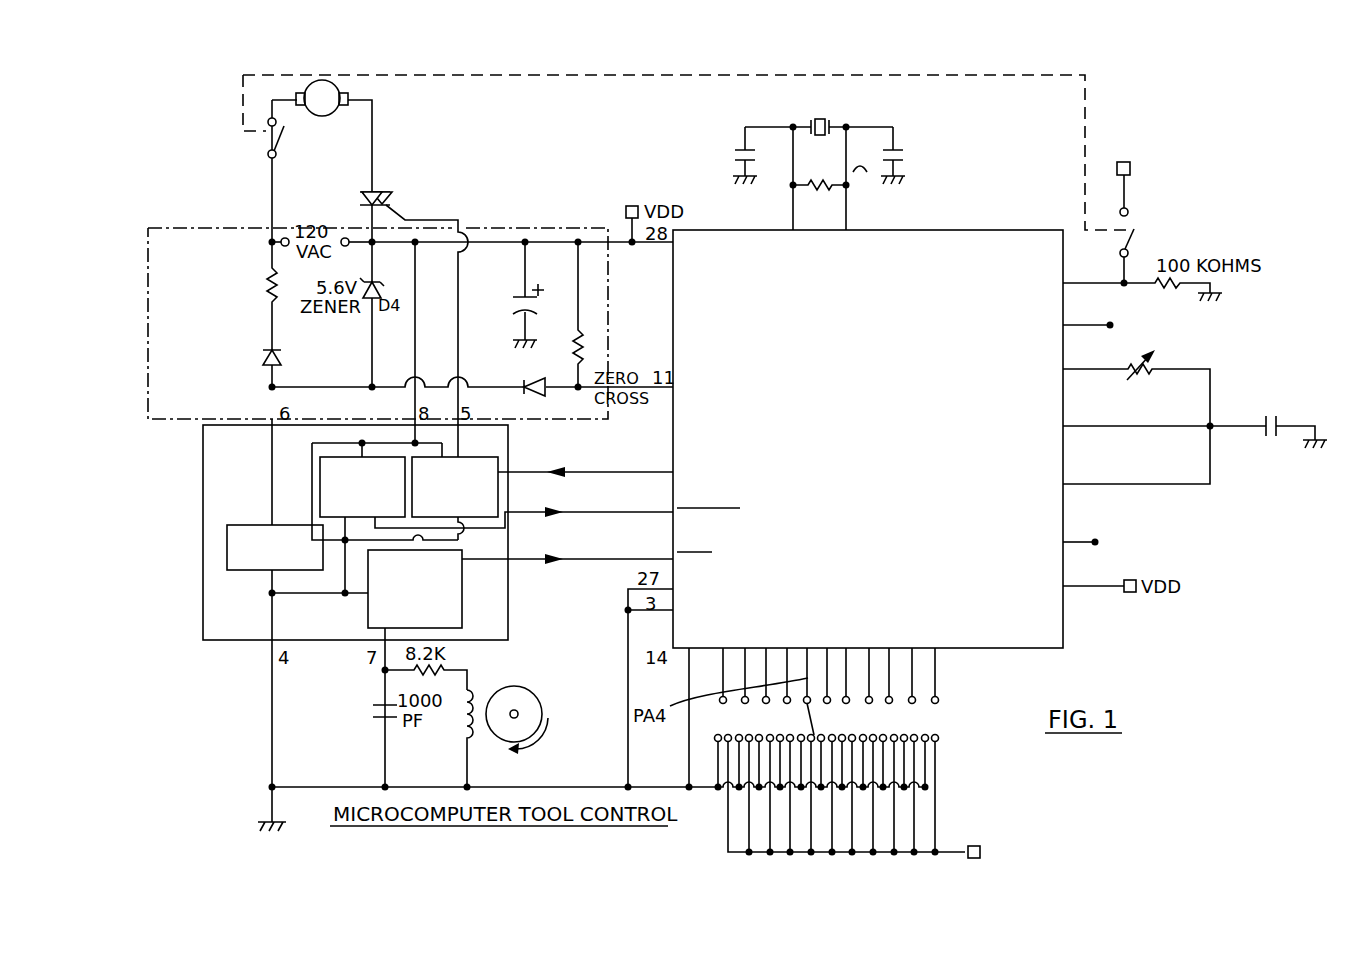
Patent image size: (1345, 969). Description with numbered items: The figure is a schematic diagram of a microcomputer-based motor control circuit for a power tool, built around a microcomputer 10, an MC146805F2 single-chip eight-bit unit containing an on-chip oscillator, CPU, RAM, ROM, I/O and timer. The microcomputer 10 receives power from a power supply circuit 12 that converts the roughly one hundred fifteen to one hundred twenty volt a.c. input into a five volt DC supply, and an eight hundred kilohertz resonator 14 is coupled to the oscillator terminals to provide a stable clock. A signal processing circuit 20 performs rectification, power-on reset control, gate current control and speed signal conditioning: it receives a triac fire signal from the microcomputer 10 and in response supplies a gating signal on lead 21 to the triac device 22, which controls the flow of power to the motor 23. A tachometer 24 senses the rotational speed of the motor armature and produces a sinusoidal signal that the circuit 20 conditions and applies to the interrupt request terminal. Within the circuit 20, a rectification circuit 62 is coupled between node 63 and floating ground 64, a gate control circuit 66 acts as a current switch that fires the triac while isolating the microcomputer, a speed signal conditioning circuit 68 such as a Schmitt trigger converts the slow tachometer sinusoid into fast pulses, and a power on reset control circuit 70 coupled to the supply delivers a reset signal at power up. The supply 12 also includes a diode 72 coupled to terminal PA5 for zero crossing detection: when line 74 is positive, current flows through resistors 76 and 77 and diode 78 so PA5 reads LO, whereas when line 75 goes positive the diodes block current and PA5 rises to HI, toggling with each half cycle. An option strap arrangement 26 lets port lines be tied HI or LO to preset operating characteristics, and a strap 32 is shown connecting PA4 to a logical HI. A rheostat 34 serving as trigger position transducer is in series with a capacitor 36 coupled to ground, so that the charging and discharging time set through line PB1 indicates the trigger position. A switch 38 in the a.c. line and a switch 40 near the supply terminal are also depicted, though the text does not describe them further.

The microcomputer 10 is at (962, 250).
The power supply circuit 12 is at (505, 228).
The 800 KHz resonator 14 is at (882, 128).
The signal processing circuit 20 is at (422, 529).
The lead 21 is at (458, 288).
The triac device 22 is at (394, 198).
The motor 23 is at (332, 96).
The tachometer 24 is at (482, 694).
The option strap arrangement 26 is at (948, 715).
The strap 32 is at (813, 727).
The rheostat 34 is at (1145, 346).
The capacitor 36 is at (1285, 418).
The power switch 38 is at (284, 127).
The switch 40 is at (1134, 241).
The rectification circuit 62 is at (254, 572).
The node 63 is at (324, 386).
The floating ground 64 is at (272, 800).
The gate control circuit 66 is at (484, 467).
The speed signal conditioning circuit 68 is at (462, 593).
The power on reset control circuit 70 is at (320, 470).
The diode 72 is at (535, 379).
The line 74 is at (485, 245).
The line 75 is at (272, 316).
The resistor 76 is at (580, 350).
The resistor 77 is at (277, 287).
The diode 78 is at (266, 368).